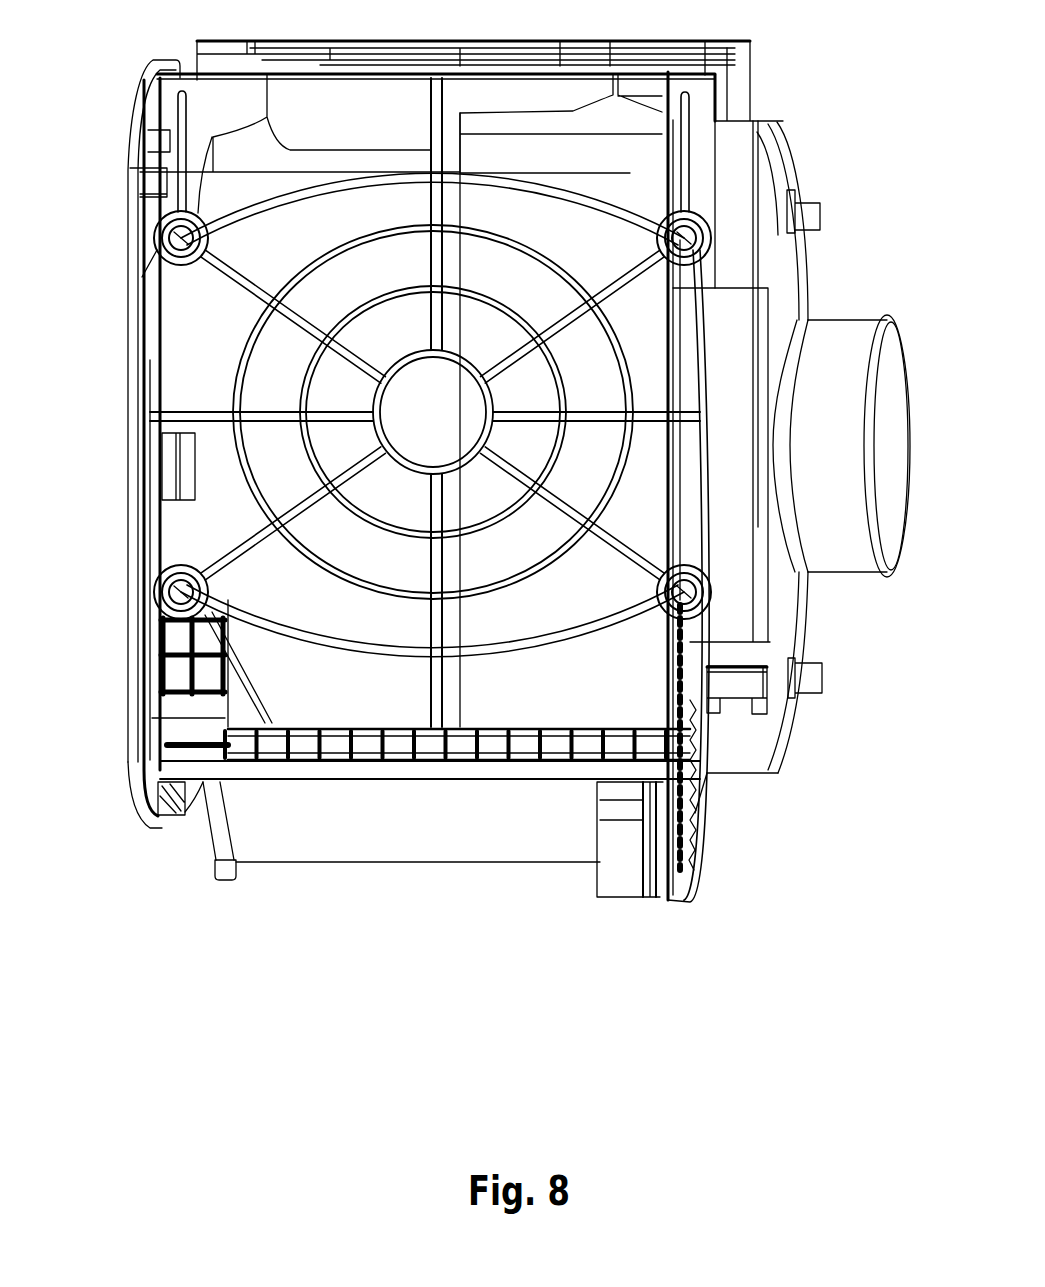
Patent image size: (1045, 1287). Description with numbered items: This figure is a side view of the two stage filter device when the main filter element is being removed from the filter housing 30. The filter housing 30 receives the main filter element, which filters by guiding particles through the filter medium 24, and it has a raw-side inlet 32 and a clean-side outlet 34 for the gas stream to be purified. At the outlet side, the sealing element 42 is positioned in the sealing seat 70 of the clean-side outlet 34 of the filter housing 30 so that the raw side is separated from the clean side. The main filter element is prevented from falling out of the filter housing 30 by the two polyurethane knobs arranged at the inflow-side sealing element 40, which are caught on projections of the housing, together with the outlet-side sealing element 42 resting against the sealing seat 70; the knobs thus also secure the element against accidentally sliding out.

The filter medium 24 is at (411, 836).
The filter housing 30 is at (411, 418).
The raw-side inlet 32 is at (127, 378).
The clean-side outlet 34 is at (808, 446).
The inflow-side sealing element 40 is at (236, 878).
The outlet-side sealing element 42 is at (690, 903).
The sealing seat 70 is at (695, 810).